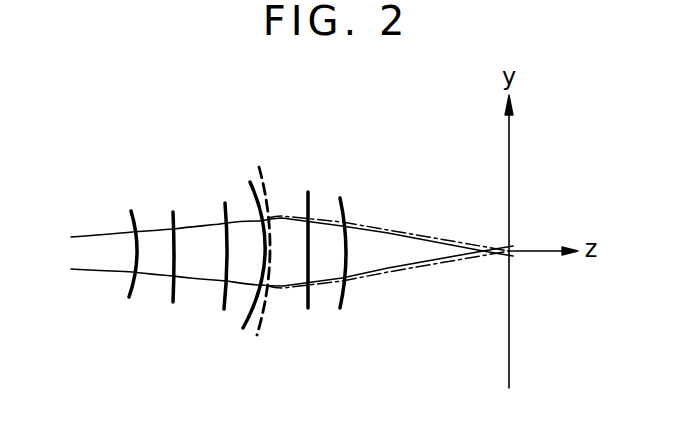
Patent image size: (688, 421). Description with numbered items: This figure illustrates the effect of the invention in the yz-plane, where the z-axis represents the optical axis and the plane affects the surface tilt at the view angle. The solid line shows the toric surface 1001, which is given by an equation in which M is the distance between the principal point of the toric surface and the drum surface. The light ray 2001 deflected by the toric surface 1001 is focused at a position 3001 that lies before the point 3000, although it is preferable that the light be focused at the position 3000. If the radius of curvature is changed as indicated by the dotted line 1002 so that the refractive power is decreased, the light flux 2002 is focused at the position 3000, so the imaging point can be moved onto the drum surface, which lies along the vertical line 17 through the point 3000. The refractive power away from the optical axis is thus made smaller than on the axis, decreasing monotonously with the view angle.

The toric surface 1001 is at (250, 183).
The changed radius of curvature surface 1002 is at (260, 168).
The light ray 2001 is at (377, 268).
The light flux 2002 is at (422, 237).
The focus position 3001 is at (462, 247).
The preferable focus position 3000 is at (512, 250).
The focal plane (y axis) 17 is at (510, 346).